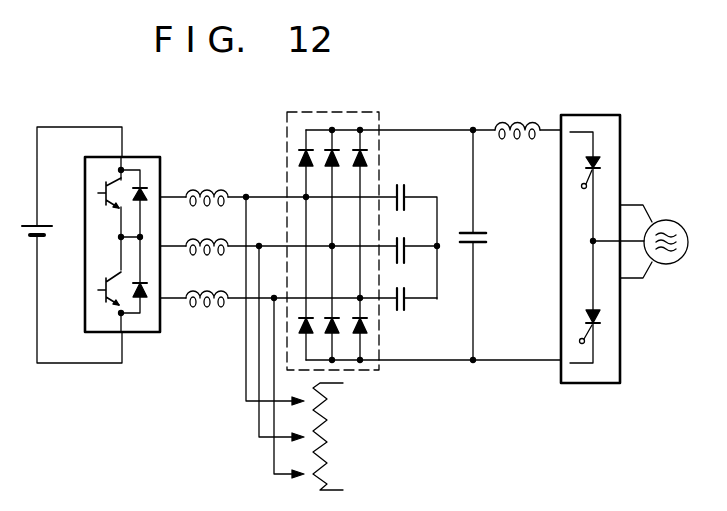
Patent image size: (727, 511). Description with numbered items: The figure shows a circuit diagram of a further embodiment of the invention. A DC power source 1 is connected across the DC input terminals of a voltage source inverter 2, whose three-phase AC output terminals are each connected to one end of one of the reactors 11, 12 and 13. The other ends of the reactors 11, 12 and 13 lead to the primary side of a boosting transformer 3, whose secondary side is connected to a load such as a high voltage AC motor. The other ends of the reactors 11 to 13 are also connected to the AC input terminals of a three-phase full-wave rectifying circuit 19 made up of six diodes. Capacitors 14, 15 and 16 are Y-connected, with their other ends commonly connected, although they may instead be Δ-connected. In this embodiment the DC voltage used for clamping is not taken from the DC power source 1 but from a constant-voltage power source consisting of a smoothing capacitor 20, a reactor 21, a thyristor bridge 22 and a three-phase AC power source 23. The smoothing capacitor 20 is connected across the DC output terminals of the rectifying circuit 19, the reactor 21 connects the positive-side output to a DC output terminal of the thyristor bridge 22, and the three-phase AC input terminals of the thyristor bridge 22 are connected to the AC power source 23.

The DC power source 1 is at (47, 236).
The voltage source inverter 2 is at (146, 157).
The boosting transformer 3 is at (337, 434).
The reactor 11 is at (205, 189).
The reactor 12 is at (205, 243).
The reactor 13 is at (204, 294).
The capacitor 14 is at (399, 180).
The capacitor 15 is at (406, 218).
The capacitor 16 is at (409, 316).
The three-phase full-wave rectifying circuit 19 is at (360, 112).
The smoothing capacitor 20 is at (493, 239).
The reactor 21 is at (512, 124).
The thyristor bridge circuit 22 is at (589, 114).
The three-phase AC power source 23 is at (668, 221).